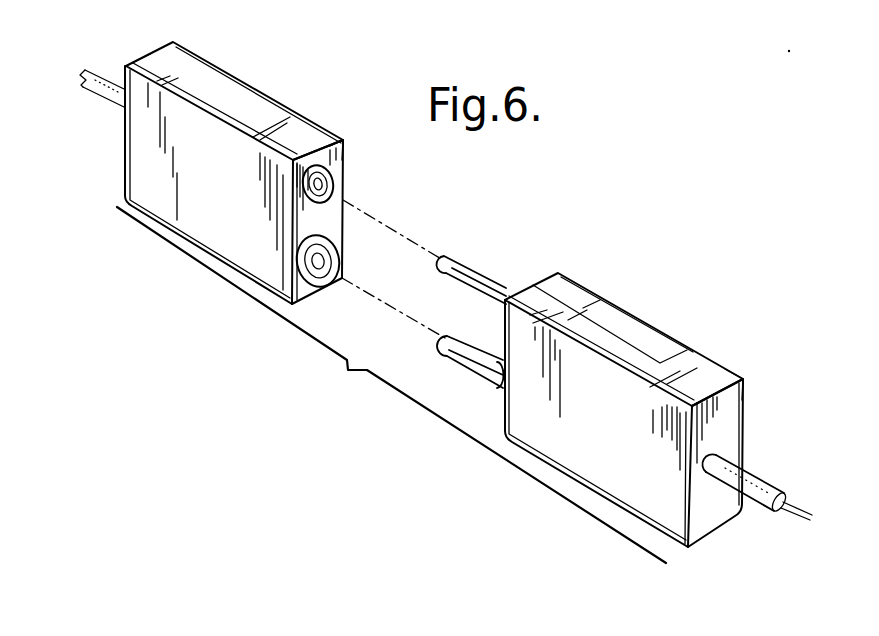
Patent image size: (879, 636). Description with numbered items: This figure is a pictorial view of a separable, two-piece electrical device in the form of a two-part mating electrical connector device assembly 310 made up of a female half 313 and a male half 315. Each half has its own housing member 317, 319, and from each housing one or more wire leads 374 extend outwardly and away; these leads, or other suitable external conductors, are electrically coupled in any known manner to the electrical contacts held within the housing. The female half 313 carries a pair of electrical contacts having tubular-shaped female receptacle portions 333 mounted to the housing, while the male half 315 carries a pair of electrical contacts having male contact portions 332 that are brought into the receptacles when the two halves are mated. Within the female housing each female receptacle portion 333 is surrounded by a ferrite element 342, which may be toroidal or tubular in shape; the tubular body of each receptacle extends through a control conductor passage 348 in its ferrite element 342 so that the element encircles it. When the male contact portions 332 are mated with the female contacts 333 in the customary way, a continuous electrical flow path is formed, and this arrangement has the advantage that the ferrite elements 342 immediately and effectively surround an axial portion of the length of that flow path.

The two-part mating electrical connector device assembly 310 is at (348, 371).
The female half 313 is at (273, 107).
The male half 315 is at (630, 357).
The housing member 317 is at (127, 67).
The housing member 319 is at (770, 366).
The male contact portions 332 is at (462, 347).
The female receptacle portions 333 is at (331, 179).
The ferrite elements 342 is at (370, 191).
The control conductor passage 348 is at (344, 160).
The wire leads 374 is at (96, 93).